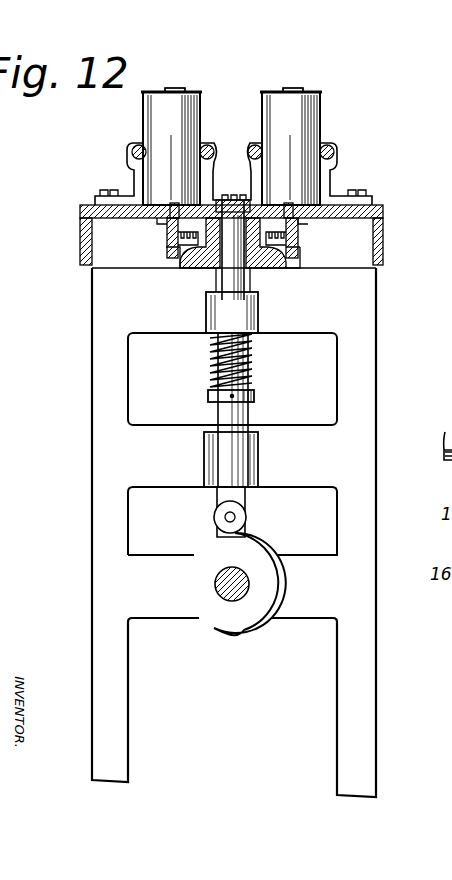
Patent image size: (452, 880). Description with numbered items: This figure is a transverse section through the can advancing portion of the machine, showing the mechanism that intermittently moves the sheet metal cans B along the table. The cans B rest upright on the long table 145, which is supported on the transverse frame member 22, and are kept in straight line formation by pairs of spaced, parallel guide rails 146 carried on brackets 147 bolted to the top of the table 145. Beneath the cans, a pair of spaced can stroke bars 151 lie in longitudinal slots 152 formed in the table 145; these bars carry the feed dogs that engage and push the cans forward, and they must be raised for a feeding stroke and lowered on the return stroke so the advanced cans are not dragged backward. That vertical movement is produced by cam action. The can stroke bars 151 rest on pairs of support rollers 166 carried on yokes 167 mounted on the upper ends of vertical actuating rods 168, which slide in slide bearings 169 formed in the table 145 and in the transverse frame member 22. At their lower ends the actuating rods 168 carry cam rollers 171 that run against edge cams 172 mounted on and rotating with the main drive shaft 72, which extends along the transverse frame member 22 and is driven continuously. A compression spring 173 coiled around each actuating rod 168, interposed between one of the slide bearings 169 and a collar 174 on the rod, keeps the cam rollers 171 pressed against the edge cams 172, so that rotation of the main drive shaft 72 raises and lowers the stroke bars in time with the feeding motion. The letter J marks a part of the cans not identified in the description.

The transverse frame member 22 is at (100, 315).
The table 145 is at (380, 206).
The guide rails 146 is at (131, 153).
The brackets 147 is at (136, 146).
The can stroke bars 151 is at (172, 208).
The longitudinal slots 152 is at (160, 222).
The support rollers 166 is at (168, 253).
The yokes 167 is at (255, 272).
The vertical actuating rods 168 is at (225, 284).
The slide bearings 169 is at (212, 204).
The cam rollers 171 is at (247, 514).
The edge cams 172 is at (272, 578).
The compression spring 173 is at (247, 355).
The collar 174 is at (254, 395).
The main drive shaft 72 is at (222, 582).
The sheet metal cans B is at (231, 146).
The cylinder cap J is at (182, 89).